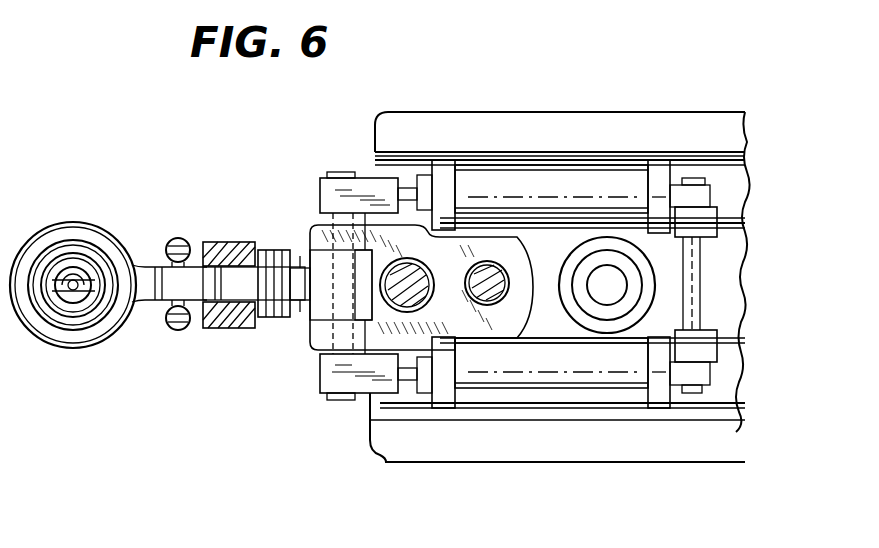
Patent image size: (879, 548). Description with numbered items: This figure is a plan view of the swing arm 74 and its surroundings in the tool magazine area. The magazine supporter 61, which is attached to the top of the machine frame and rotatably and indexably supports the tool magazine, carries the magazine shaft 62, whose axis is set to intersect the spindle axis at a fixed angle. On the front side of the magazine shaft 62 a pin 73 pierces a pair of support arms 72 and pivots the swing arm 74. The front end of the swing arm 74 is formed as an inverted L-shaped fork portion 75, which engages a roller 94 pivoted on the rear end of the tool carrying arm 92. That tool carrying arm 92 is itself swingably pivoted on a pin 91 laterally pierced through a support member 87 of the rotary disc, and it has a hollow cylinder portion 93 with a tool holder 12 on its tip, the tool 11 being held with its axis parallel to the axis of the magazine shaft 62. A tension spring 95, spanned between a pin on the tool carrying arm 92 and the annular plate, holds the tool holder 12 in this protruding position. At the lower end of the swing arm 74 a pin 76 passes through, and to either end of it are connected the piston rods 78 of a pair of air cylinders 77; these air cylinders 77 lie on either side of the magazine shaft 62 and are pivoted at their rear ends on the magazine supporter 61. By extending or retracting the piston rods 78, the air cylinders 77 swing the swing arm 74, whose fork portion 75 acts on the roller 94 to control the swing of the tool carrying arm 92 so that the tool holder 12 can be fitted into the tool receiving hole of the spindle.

The tool 11 is at (75, 290).
The tool holder 12 is at (102, 212).
The hollow cylinder portion 93 is at (72, 225).
The tool carrying arm 92 is at (147, 300).
The tension spring 95 is at (178, 238).
The support member 87 is at (242, 242).
The pin 91 is at (228, 330).
The roller 94 is at (272, 318).
The fork portion 75 is at (300, 256).
The swing arm 74 is at (318, 270).
The pin 73 is at (358, 277).
The support arms 72 is at (366, 230).
The pin 76 is at (344, 172).
The piston rods 78 is at (408, 175).
The air cylinders 77 is at (565, 180).
The magazine shaft 62 is at (420, 268).
The magazine supporter 61 is at (694, 165).